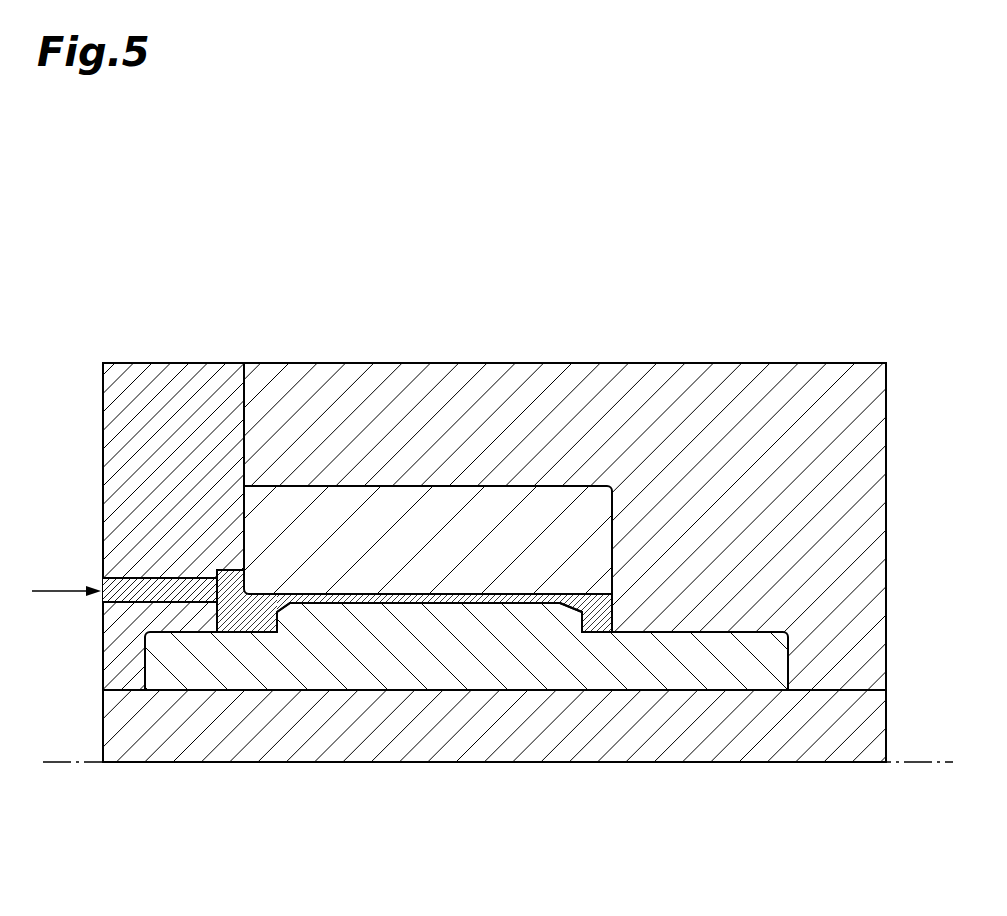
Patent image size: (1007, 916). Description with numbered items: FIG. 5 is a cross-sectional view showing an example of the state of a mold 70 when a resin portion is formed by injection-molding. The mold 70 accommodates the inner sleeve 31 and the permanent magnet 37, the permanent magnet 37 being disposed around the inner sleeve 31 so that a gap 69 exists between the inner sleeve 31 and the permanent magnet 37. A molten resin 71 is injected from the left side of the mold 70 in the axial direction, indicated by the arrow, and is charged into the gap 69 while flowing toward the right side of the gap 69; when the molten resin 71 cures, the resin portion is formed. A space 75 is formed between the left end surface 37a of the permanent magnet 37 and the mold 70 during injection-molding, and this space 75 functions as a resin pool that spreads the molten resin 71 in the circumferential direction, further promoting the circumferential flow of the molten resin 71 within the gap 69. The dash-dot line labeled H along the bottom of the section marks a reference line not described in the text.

The mold 70 is at (757, 385).
The left end surface of the permanent magnet 37a is at (242, 540).
The permanent magnet 37 is at (500, 497).
The inner sleeve 31 is at (631, 677).
The molten resin 71 is at (153, 583).
The space 75 is at (245, 615).
The gap 69 is at (398, 600).
The horizontal reference line H is at (921, 762).